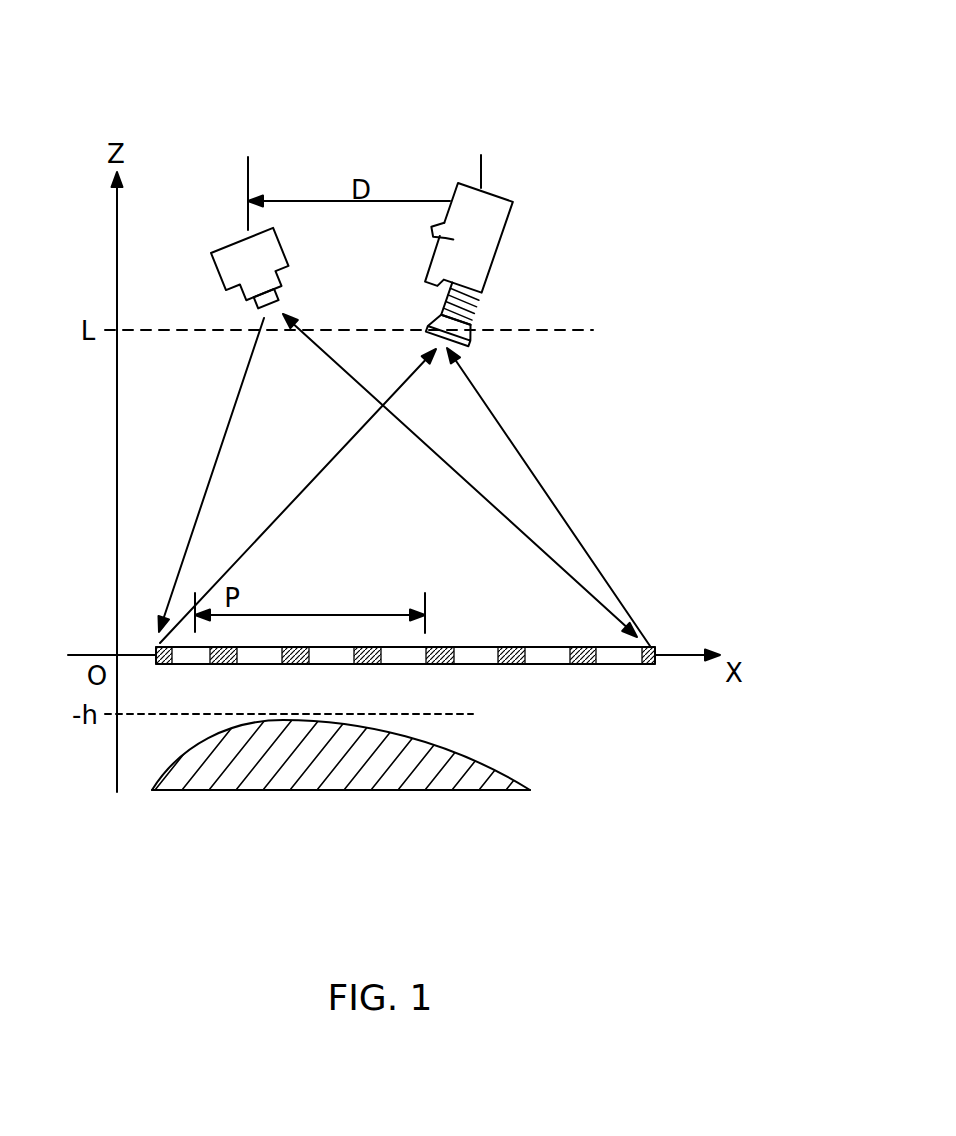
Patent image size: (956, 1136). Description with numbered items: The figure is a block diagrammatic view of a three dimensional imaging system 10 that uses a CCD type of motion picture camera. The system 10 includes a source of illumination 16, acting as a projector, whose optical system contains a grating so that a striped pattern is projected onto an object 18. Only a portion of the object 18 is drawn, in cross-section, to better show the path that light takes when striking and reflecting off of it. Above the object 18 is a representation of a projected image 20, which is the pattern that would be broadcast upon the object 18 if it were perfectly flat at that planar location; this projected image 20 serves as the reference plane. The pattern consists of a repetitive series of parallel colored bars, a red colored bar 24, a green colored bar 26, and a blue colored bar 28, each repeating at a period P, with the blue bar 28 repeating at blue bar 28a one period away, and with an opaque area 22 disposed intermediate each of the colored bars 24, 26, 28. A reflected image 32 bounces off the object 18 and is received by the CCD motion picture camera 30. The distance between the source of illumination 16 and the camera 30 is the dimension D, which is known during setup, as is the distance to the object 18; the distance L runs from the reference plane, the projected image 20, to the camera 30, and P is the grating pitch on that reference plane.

The three dimensional imaging system 10 is at (622, 82).
The source of illumination 16 is at (233, 244).
The CCD motion picture camera 30 is at (513, 202).
The reflected image 32 is at (440, 373).
The projected image 20 is at (479, 742).
The opaque area 22 is at (208, 667).
The red colored bar 24 is at (328, 665).
The green colored bar 26 is at (260, 665).
The blue colored bar 28 is at (177, 667).
The blue colored bar 28a is at (405, 656).
The object 18 is at (513, 777).